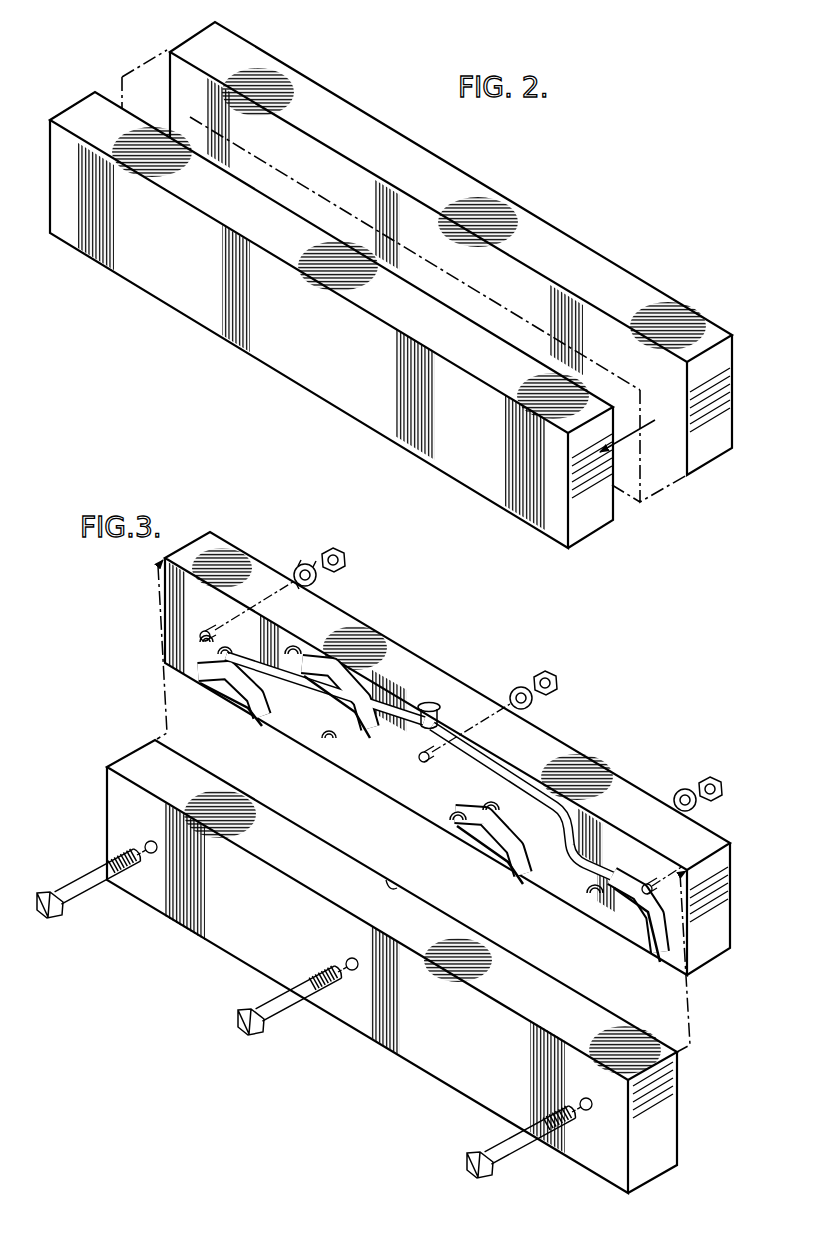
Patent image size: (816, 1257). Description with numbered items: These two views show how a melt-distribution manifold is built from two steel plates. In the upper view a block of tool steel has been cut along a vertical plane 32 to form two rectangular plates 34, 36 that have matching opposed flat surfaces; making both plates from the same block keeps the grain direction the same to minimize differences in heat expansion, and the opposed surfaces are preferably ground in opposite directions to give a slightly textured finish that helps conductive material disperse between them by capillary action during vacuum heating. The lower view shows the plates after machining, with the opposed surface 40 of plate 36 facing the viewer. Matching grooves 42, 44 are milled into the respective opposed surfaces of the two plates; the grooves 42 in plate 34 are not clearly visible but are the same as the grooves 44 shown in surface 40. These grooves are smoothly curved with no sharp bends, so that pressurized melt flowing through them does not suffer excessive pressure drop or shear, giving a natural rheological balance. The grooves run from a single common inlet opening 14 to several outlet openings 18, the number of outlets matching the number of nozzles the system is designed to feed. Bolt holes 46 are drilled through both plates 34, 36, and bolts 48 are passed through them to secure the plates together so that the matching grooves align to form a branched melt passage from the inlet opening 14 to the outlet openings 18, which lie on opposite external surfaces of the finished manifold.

In FIG. 3, the inlet opening 14 is at (430, 703).
In FIG. 3, the outlet openings 18 is at (544, 913).
In FIG. 2, the vertical plane 32 is at (690, 447).
In FIG. 2, the rectangular plate 34 is at (590, 517).
In FIG. 3, the rectangular plate 34 is at (662, 1130).
In FIG. 2, the rectangular plate 36 is at (703, 312).
In FIG. 3, the rectangular plate 36 is at (702, 950).
In FIG. 3, the opposed flat surface 40 is at (199, 550).
In FIG. 3, the grooves 42 is at (394, 886).
In FIG. 3, the grooves 44 is at (508, 780).
In FIG. 3, the bolt holes 46 is at (643, 886).
In FIG. 3, the bolts 48 is at (517, 1145).